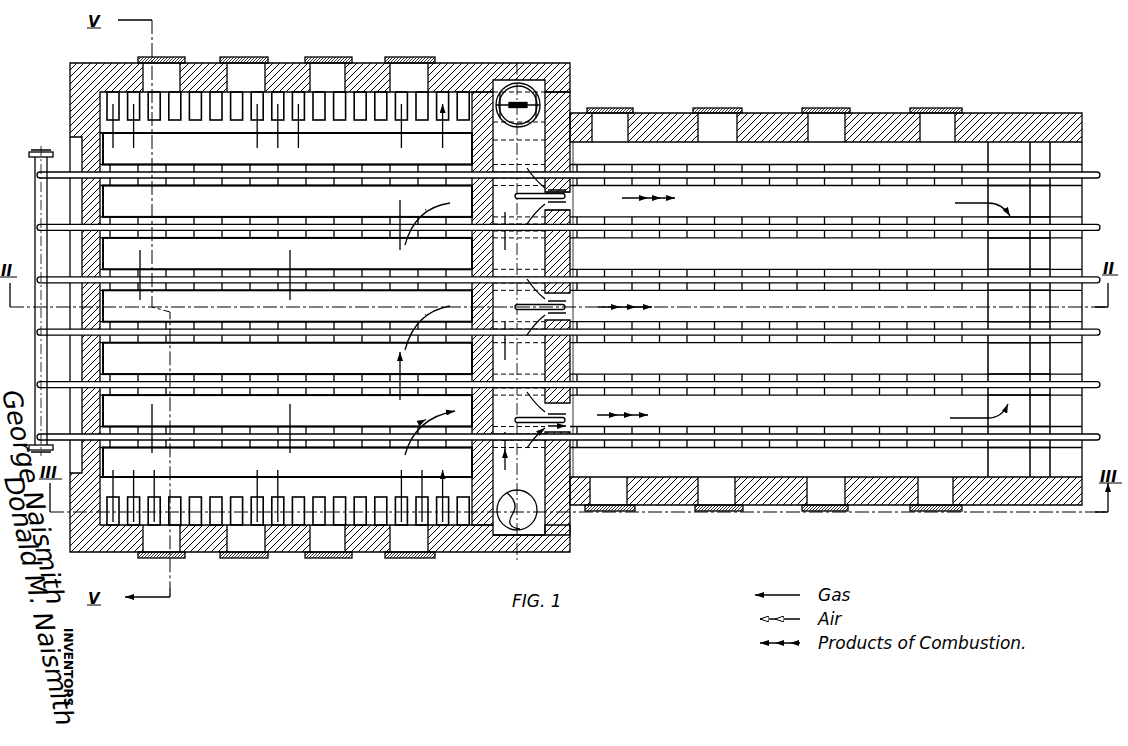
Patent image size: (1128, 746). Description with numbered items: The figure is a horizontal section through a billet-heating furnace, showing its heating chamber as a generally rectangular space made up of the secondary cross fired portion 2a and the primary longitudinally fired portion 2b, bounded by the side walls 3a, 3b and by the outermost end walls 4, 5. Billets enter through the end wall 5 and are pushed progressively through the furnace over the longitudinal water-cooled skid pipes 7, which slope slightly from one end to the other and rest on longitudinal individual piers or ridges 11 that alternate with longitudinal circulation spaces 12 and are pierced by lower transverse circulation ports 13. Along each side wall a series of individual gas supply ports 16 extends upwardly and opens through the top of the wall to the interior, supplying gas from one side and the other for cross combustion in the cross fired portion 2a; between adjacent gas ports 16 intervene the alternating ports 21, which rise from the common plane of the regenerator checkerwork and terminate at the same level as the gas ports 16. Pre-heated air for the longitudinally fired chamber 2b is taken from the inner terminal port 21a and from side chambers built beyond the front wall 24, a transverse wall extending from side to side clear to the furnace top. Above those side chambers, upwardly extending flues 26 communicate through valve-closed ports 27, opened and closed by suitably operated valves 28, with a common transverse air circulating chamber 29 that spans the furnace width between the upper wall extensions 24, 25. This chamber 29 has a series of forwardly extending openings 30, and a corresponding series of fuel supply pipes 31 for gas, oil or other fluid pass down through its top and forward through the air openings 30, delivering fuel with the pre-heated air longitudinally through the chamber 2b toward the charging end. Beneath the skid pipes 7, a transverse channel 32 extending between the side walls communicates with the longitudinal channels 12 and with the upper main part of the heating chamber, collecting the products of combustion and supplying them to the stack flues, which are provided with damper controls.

The secondary cross fired portion 2a is at (286, 305).
The primary longitudinally fired portion 2b is at (705, 309).
The side wall 3a is at (284, 70).
The side wall 3b is at (766, 113).
The outermost end wall 4 is at (80, 360).
The outermost end wall 5 is at (1084, 205).
The longitudinal water-cooled skid pipes 7 is at (922, 282).
The longitudinal individual piers or ridges 11 is at (247, 268).
The longitudinal circulation spaces 12 is at (748, 305).
The lower transverse circulation ports 13 is at (175, 432).
The gas supply ports 16 is at (368, 110).
The alternating ports 21 is at (232, 112).
The inner terminal port 21a is at (466, 516).
The front wall 24 is at (570, 358).
The upper wall extension 25 is at (472, 358).
The upwardly extending flues 26 is at (503, 538).
The valve-closed ports 27 is at (527, 527).
The valves 28 is at (539, 67).
The common transverse air circulating chamber 29 is at (519, 312).
The forwardly extending openings 30 is at (567, 206).
The fuel supply pipes 31 is at (578, 184).
The transverse channel 32 is at (1019, 309).